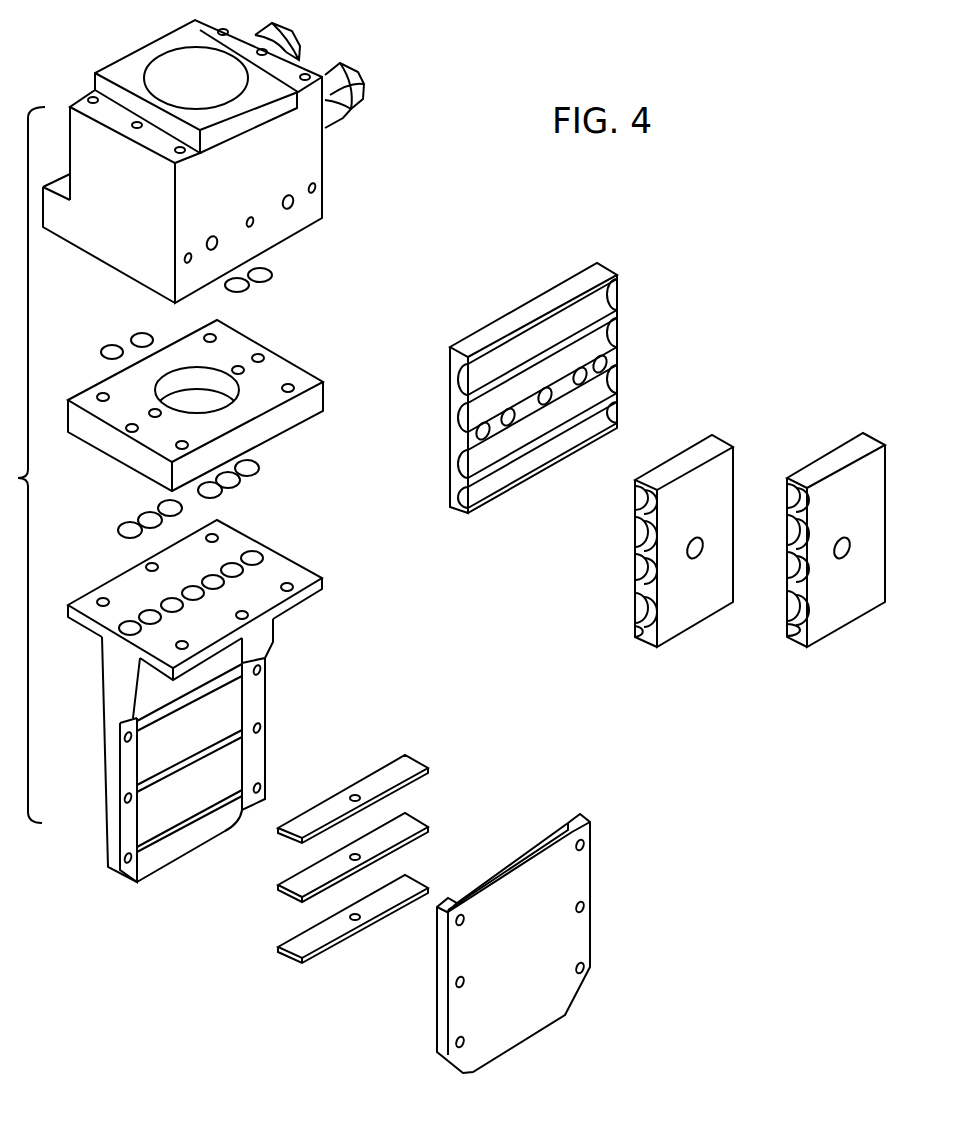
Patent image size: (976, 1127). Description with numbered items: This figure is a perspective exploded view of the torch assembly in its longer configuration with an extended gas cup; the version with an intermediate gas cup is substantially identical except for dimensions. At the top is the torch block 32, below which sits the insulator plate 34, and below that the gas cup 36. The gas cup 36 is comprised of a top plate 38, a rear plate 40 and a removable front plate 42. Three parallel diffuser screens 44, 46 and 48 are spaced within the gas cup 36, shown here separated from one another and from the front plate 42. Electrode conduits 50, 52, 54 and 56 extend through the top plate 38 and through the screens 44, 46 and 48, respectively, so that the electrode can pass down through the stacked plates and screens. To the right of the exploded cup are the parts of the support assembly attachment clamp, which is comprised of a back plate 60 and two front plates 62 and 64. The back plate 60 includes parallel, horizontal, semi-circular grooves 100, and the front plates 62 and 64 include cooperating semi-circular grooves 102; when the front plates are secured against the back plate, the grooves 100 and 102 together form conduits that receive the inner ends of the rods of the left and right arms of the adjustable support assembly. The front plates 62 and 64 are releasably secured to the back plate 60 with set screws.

The torch block 32 is at (325, 138).
The insulator plate 34 is at (137, 378).
The gas cup 36 is at (300, 701).
The top plate 38 is at (127, 577).
The rear plate 40 is at (270, 650).
The removable front plate 42 is at (563, 897).
The diffuser screen 44 is at (371, 779).
The diffuser screen 46 is at (359, 841).
The diffuser screen 48 is at (371, 902).
The electrode conduit 50 is at (193, 588).
The electrode conduit 52 is at (355, 795).
The electrode conduit 54 is at (350, 857).
The electrode conduit 56 is at (358, 920).
The back plate 60 is at (564, 402).
The front plate 62 is at (649, 558).
The front plate 64 is at (847, 610).
The semi-circular grooves 100 is at (497, 482).
The semi-circular grooves 102 is at (637, 615).